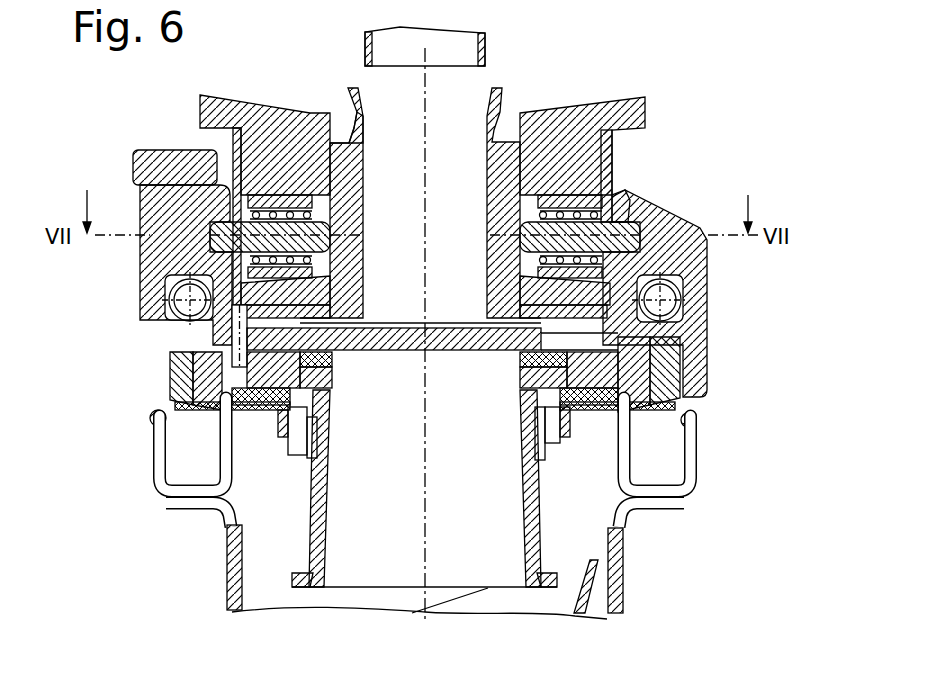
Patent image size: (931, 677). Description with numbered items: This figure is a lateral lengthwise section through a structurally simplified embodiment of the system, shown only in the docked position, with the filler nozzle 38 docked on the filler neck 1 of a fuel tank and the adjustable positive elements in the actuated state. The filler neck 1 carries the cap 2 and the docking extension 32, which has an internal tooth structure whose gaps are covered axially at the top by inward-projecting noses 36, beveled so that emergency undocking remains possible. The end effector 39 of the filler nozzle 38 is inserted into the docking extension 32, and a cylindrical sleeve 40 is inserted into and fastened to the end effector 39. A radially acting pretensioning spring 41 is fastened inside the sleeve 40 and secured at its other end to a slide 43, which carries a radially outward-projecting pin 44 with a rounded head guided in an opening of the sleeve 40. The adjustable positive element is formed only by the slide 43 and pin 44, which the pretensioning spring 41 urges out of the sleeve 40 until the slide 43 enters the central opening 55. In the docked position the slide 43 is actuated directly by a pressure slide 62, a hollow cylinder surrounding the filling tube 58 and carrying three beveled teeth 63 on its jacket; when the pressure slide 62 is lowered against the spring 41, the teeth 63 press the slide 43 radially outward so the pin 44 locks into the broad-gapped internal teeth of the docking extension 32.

The filler neck 1 is at (622, 543).
The cap 2 is at (118, 298).
The docking extension 32 is at (678, 213).
The nose 36 is at (628, 190).
The filler nozzle 38 is at (273, 80).
The end effector 39 is at (643, 110).
The sleeve 40 is at (238, 135).
The pretensioning spring 41 is at (650, 340).
The slide 43 is at (545, 203).
The pin 44 is at (645, 257).
The central opening 55 is at (348, 143).
The filling tube 58 is at (485, 52).
The pressure slide 62 is at (500, 105).
The teeth 63 is at (343, 146).